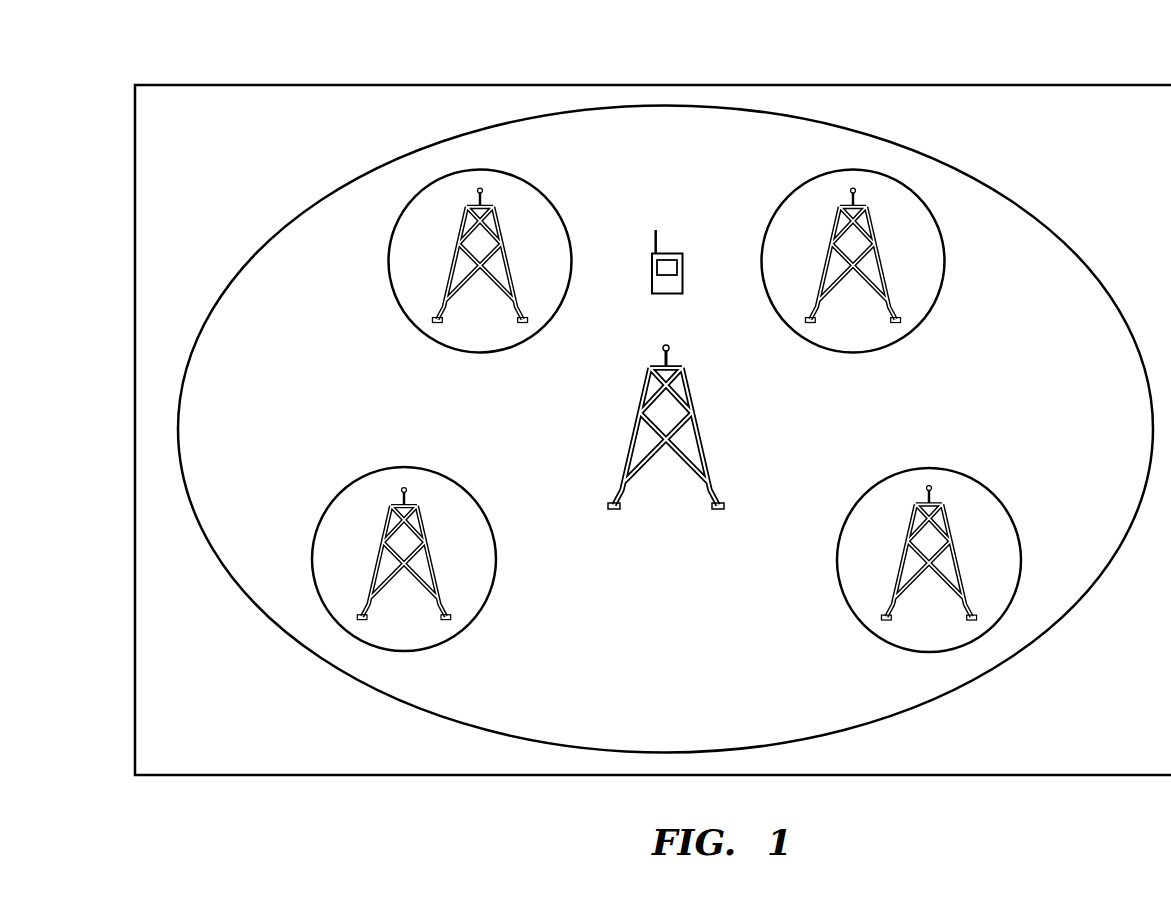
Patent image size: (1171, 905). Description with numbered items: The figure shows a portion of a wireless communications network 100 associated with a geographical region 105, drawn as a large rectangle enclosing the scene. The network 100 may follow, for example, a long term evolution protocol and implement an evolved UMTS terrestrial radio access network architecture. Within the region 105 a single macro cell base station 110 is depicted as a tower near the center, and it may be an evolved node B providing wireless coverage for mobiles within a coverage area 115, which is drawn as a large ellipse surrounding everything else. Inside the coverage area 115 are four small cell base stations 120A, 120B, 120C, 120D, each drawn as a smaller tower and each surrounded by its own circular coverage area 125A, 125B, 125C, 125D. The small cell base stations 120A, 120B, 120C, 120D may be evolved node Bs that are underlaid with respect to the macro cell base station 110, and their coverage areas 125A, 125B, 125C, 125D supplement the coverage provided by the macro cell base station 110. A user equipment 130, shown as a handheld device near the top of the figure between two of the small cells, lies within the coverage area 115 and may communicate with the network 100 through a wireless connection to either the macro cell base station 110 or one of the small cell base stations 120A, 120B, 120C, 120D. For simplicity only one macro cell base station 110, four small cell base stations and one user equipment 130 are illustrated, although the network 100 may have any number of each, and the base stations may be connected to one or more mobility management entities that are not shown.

The wireless communications network 100 is at (1068, 76).
The geographical region 105 is at (1162, 145).
The macro cell base station 110 is at (700, 437).
The coverage area 115 is at (1037, 218).
The small cell base station 120A is at (877, 342).
The small cell base station 120B is at (953, 641).
The small cell base station 120C is at (428, 642).
The small cell base station 120D is at (505, 342).
The coverage area 125A is at (939, 295).
The coverage area 125B is at (1012, 518).
The coverage area 125C is at (490, 593).
The coverage area 125D is at (566, 219).
The UE 130 is at (682, 289).